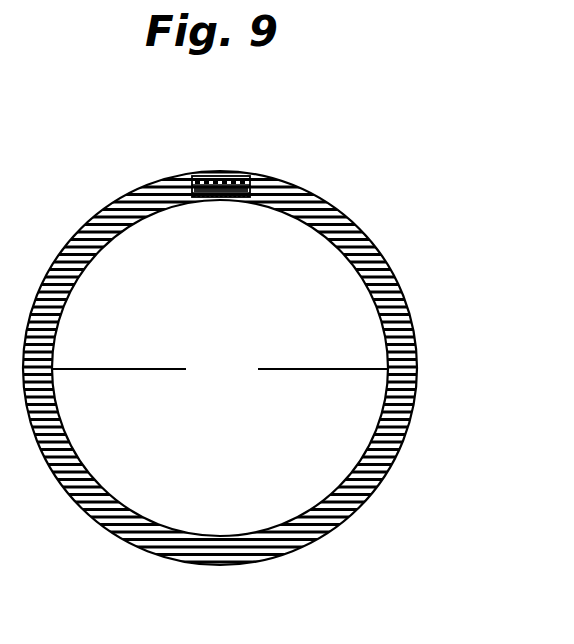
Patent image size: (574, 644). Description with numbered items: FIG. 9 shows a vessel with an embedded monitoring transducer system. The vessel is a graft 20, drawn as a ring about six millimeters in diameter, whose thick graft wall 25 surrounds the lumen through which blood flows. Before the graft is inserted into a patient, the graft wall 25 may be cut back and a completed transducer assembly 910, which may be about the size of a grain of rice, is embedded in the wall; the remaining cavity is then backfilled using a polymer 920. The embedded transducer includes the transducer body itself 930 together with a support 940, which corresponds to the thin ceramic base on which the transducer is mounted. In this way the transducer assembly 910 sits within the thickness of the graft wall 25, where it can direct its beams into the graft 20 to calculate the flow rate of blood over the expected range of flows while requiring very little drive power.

The graft 20 is at (437, 237).
The graft wall 25 is at (397, 412).
The transducer assembly 910 is at (251, 166).
The polymer 920 is at (213, 177).
The transducer body 930 is at (205, 201).
The support 940 is at (262, 180).